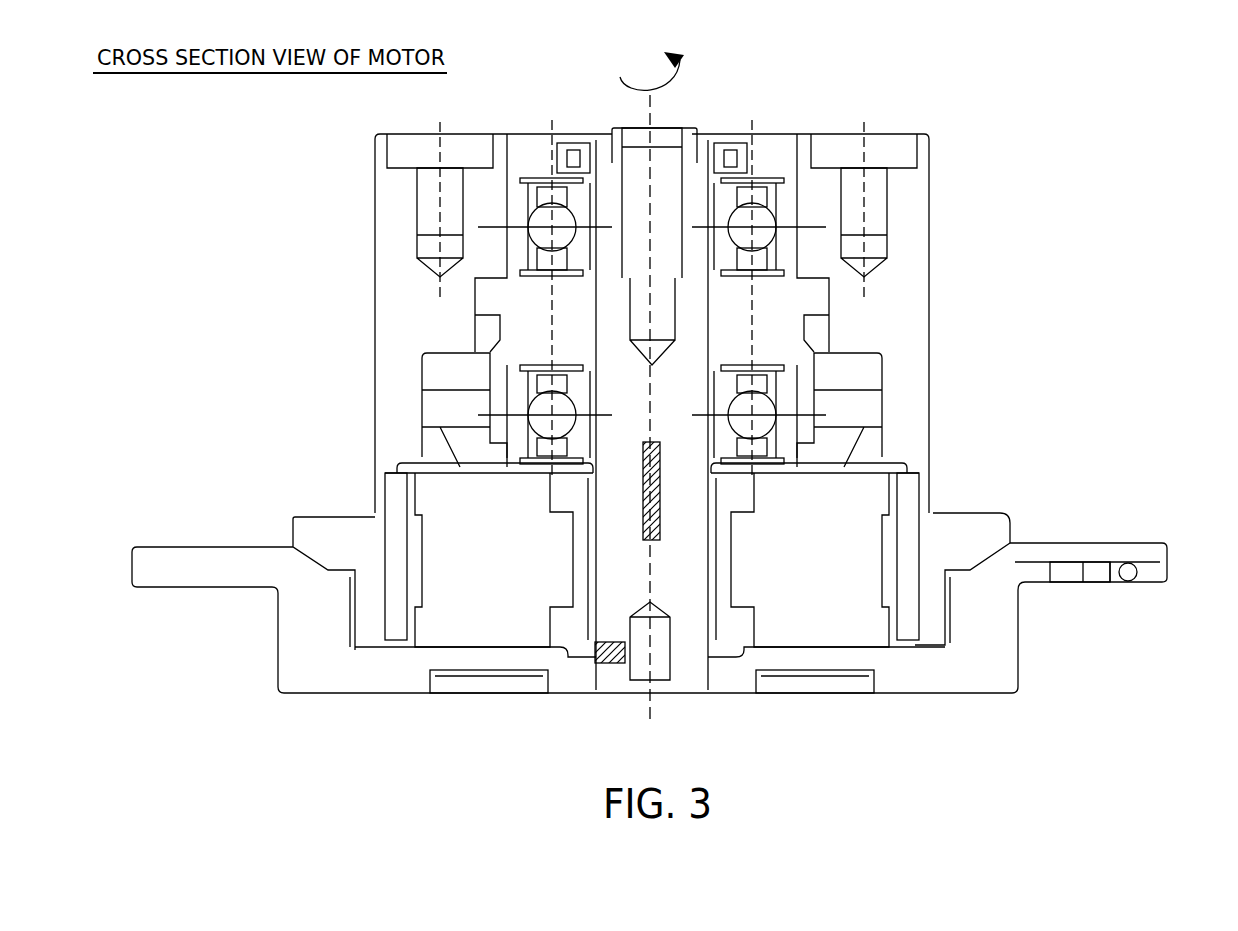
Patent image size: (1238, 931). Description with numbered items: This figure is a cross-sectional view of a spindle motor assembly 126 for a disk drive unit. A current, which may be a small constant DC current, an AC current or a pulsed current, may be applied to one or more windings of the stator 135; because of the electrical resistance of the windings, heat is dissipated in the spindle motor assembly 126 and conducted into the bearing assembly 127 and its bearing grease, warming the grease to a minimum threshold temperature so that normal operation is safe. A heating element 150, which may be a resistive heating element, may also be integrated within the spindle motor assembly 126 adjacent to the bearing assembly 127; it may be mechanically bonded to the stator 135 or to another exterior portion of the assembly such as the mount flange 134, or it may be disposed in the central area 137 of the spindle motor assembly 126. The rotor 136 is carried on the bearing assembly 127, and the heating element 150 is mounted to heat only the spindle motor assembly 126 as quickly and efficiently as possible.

The spindle motor assembly 126 is at (357, 142).
The bearing assembly 127 is at (797, 405).
The mount flange 134 is at (567, 690).
The stator 135 is at (455, 612).
The rotor 136 is at (400, 505).
The central area 137 is at (656, 386).
The heating element 150 is at (658, 487).